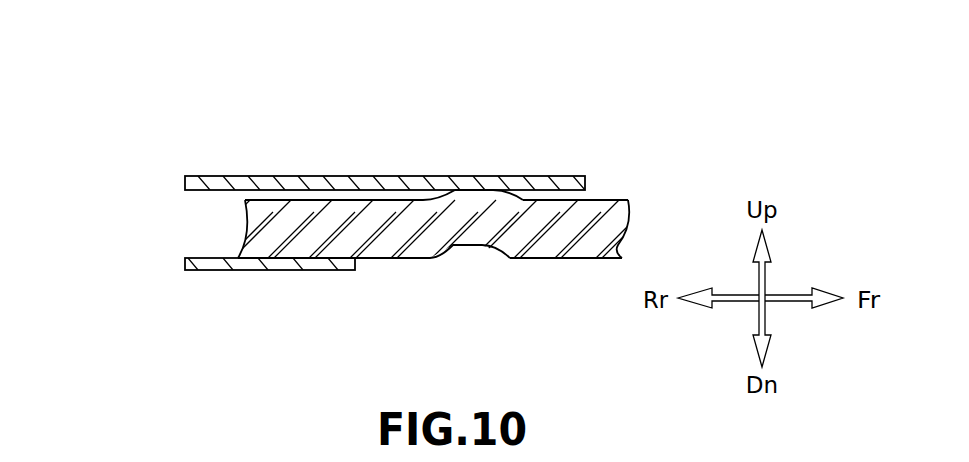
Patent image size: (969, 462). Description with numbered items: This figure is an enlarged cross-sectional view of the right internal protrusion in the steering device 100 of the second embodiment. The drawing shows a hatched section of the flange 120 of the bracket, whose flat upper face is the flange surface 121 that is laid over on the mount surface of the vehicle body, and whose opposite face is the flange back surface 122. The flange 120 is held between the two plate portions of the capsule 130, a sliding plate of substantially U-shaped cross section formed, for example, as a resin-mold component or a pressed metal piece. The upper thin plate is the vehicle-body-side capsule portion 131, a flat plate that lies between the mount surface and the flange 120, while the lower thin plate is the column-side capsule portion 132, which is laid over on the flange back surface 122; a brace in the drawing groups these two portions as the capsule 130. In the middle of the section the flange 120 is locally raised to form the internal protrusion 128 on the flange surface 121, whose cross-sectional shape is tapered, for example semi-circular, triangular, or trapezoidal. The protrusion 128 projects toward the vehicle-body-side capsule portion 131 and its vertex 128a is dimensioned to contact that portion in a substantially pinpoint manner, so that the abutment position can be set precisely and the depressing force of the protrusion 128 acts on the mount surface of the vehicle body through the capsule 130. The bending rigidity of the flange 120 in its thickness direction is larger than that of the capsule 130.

The steering device 100 is at (295, 147).
The flange 120 is at (383, 260).
The flange surface 121 is at (598, 198).
The flange back surface 122 is at (567, 260).
The internal protrusion 128 is at (422, 197).
The vertex 128a is at (480, 189).
The capsule 130 is at (90, 84).
The vehicle-body-side capsule portion 131 is at (213, 177).
The column-side capsule portion 132 is at (202, 255).